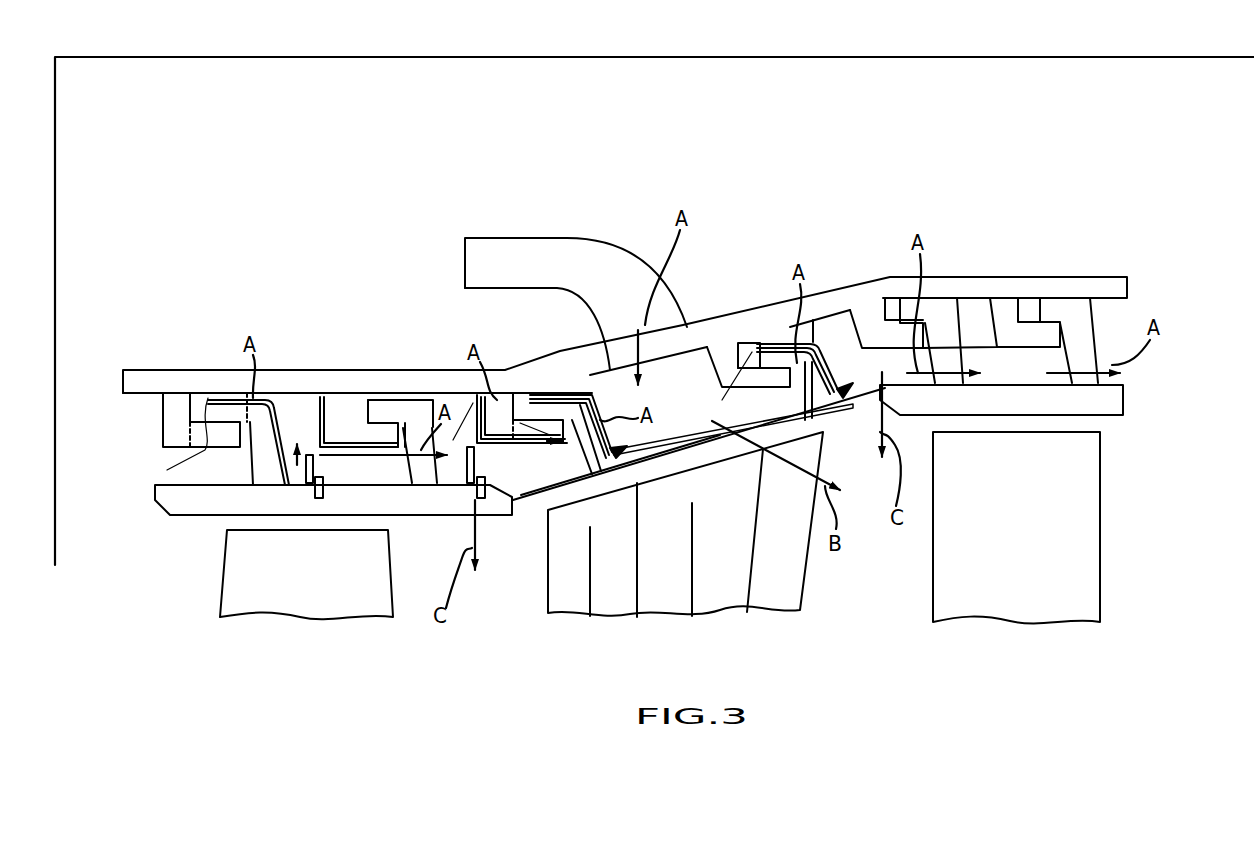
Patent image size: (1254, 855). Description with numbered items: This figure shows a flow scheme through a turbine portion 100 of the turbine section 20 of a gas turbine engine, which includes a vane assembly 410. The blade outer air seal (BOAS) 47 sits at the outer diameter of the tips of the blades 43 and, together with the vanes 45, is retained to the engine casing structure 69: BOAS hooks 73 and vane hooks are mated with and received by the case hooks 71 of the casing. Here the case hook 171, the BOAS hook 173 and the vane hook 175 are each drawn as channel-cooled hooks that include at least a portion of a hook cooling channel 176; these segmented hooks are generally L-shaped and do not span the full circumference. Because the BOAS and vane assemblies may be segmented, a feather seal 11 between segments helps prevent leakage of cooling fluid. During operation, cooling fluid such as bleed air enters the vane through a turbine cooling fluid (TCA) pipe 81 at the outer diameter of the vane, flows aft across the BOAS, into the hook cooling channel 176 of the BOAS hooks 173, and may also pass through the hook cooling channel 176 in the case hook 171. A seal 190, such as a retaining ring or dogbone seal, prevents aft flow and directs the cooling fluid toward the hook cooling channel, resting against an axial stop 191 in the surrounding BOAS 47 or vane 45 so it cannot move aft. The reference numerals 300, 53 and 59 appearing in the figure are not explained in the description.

The arrangement 300 is at (812, 37).
The turbine section 20 is at (1185, 129).
The turbine portion 100 is at (1118, 156).
The turbine cooling fluid (TCA) pipe 81 is at (500, 236).
The engine casing structure 69 is at (1028, 285).
The case hook 71 is at (595, 345).
The BOAS hook 73 is at (781, 343).
The blade outer air seal (BOAS) 47 is at (662, 486).
The blade 43 is at (314, 587).
The vane 45 is at (699, 546).
The fastener 53 is at (867, 487).
The sheet 59 is at (699, 535).
The feather seal 11 is at (589, 541).
The case hook including hook cooling channel 171 is at (361, 399).
The BOAS hook including hook cooling channel 173 is at (227, 397).
The vane hook including hook cooling channel 175 is at (653, 356).
The hook cooling channel 176 is at (528, 449).
The seal 190 is at (323, 527).
The axial stop 191 is at (400, 581).
The vane assembly 410 is at (885, 631).